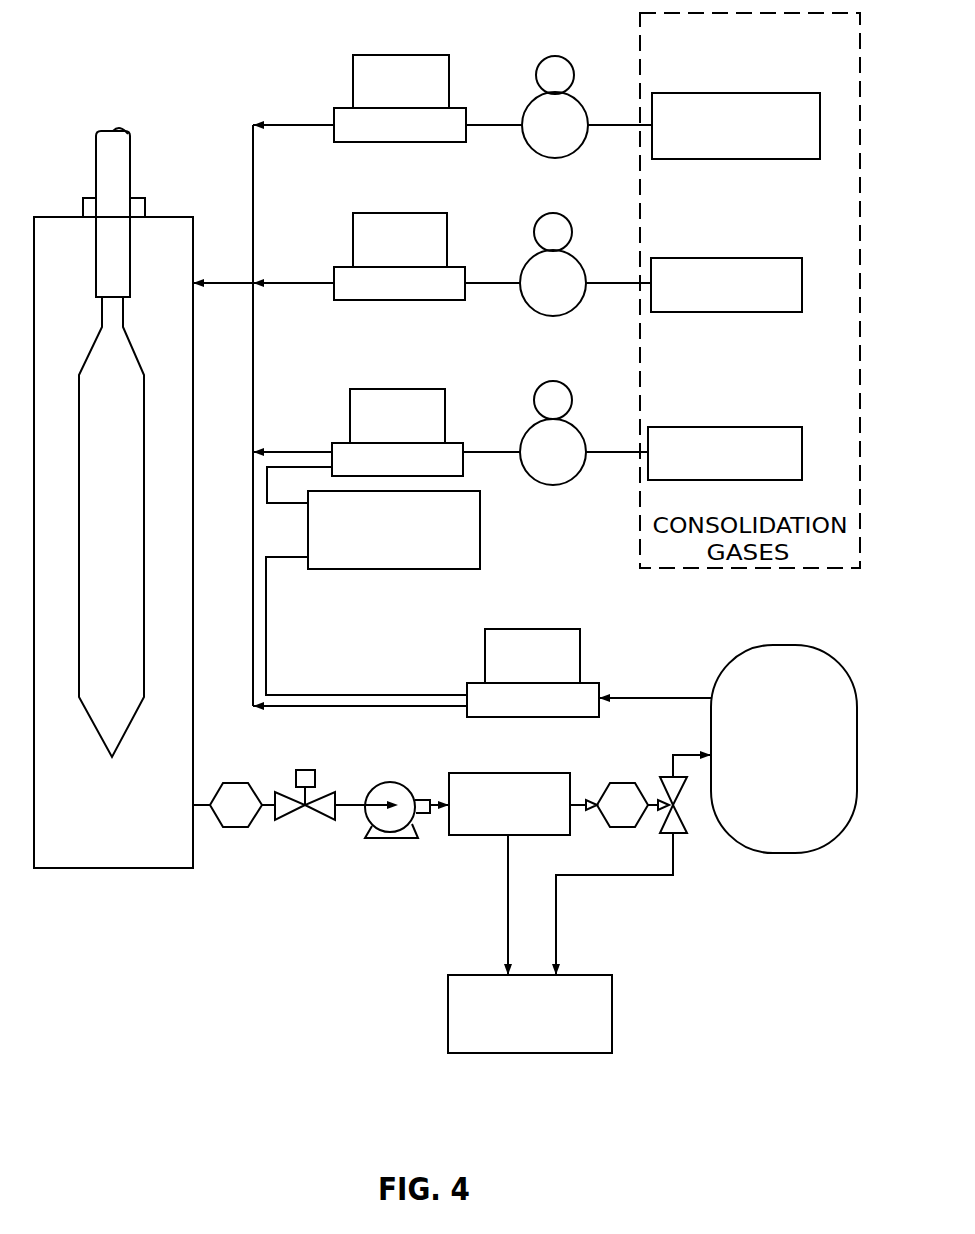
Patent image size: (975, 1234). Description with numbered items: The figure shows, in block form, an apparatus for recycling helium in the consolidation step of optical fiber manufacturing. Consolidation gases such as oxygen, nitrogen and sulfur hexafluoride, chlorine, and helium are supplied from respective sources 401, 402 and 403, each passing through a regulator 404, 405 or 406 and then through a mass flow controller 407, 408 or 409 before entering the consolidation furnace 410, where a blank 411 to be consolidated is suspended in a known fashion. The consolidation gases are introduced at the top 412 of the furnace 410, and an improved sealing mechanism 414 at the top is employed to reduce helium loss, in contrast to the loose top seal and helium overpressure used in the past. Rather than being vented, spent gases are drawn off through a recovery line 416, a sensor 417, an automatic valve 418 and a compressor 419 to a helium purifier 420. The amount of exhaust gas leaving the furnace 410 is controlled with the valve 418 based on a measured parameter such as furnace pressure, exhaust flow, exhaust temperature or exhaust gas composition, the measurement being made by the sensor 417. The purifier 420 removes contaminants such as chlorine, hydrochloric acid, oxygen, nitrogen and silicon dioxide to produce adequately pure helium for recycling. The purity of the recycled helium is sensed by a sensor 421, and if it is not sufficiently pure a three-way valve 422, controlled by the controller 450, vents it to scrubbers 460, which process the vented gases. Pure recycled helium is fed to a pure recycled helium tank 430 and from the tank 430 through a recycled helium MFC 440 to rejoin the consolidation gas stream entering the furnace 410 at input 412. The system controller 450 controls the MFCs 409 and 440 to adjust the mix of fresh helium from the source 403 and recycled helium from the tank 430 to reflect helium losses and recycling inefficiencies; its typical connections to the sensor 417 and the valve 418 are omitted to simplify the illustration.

The source 401 is at (765, 93).
The source 402 is at (752, 258).
The source 403 is at (752, 427).
The regulator 404 is at (570, 60).
The regulator 405 is at (568, 218).
The regulator 406 is at (567, 386).
The mass flow controller 407 is at (437, 55).
The mass flow controller 408 is at (438, 213).
The mass flow controller 409 is at (436, 389).
The consolidation furnace 410 is at (193, 613).
The blank 411 is at (144, 418).
The top of the furnace 412 is at (193, 252).
The sealing mechanism 414 is at (145, 197).
The recovery line 416 is at (203, 803).
The sensor 417 is at (240, 828).
The automatic valve 418 is at (315, 778).
The compressor 419 is at (413, 838).
The helium purifier 420 is at (475, 773).
The sensor 421 is at (615, 783).
The three-way valve 422 is at (682, 833).
The pure recycled helium tank 430 is at (783, 645).
The recycled helium MFC 440 is at (580, 672).
The system controller 450 is at (480, 548).
The scrubbers 460 is at (612, 1033).